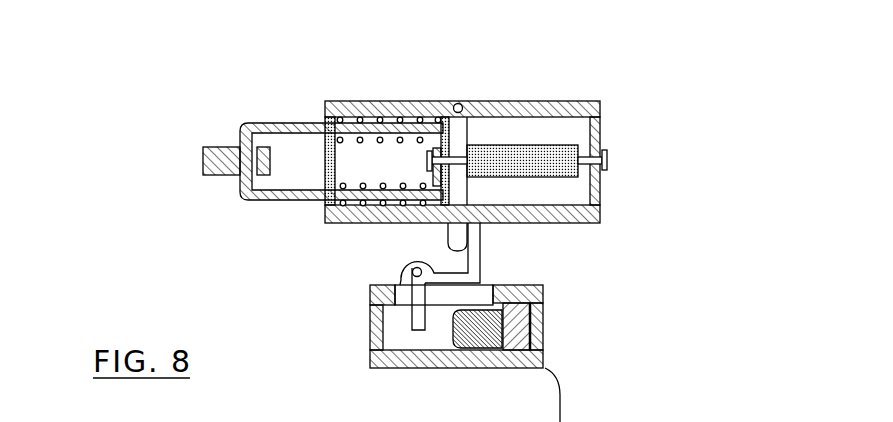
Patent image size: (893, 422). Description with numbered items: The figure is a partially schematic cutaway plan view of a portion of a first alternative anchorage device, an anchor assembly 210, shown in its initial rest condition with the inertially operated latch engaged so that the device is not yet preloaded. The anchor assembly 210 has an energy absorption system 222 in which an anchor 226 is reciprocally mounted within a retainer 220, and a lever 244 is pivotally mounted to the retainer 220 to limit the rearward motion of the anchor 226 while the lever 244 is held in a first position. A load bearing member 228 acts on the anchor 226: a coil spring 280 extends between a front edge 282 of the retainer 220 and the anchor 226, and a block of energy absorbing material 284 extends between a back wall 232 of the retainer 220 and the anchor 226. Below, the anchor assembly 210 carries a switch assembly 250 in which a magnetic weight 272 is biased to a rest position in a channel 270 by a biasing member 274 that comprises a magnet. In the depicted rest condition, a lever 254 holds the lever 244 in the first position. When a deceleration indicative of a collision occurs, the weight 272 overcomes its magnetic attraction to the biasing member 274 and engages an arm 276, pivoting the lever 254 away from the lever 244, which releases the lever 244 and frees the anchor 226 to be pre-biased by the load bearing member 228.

The anchor assembly 210 is at (160, 117).
The retainer 220 is at (538, 112).
The energy absorption system 222 is at (582, 140).
The anchor 226 is at (288, 123).
The load bearing member 228 is at (509, 141).
The back wall 232 is at (602, 197).
The lever 244 is at (449, 240).
The switch assembly 250 is at (537, 333).
The lever 254 is at (480, 248).
The channel 270 is at (408, 338).
The magnetic weight 272 is at (470, 336).
The biasing member 274 is at (512, 322).
The arm 276 is at (412, 317).
The coil spring 280 is at (363, 123).
The front edge 282 is at (324, 168).
The block of energy absorbing material 284 is at (552, 146).